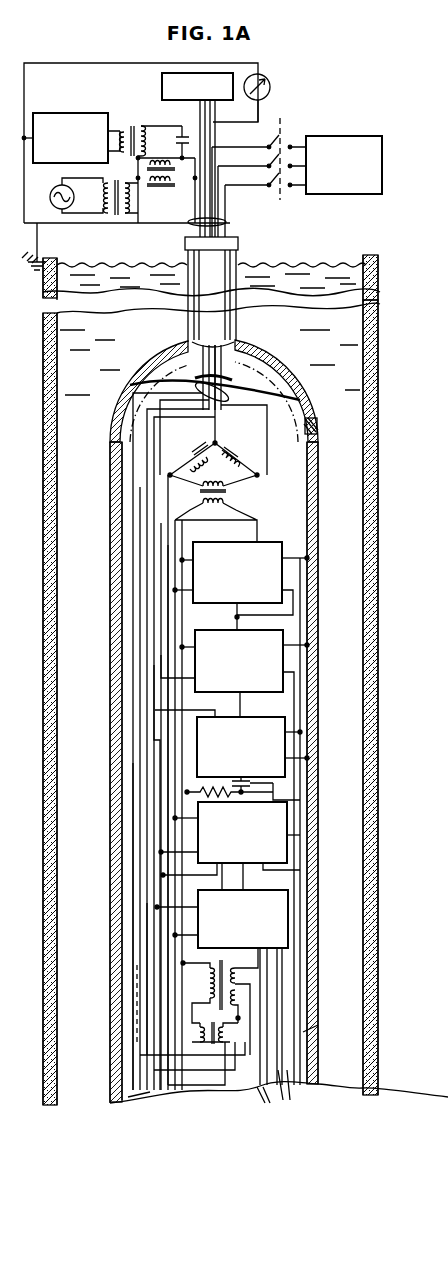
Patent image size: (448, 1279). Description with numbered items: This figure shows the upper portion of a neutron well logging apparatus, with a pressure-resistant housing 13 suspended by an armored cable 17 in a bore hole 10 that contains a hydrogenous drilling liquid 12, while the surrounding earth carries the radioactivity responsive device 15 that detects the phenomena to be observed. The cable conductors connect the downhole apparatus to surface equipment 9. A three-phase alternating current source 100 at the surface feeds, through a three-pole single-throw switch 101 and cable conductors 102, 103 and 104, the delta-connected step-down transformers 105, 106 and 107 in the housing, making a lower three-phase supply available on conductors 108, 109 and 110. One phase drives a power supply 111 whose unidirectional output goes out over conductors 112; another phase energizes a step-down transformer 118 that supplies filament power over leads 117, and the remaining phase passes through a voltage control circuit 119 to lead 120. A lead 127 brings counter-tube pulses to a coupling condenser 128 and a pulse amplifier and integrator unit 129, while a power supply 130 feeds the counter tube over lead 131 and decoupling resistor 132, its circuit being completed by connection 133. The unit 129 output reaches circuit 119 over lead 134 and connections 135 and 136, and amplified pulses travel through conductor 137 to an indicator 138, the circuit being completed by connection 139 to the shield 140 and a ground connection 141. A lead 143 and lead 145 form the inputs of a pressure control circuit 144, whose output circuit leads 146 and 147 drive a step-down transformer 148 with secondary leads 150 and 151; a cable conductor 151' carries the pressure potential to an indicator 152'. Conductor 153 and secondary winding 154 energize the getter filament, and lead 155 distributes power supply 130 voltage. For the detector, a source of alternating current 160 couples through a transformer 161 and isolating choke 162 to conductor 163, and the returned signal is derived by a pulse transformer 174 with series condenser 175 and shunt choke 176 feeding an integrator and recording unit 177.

The surface equipment 9 is at (350, 98).
The bore hole 10 is at (359, 340).
The hydrogenous drilling liquid 12 is at (316, 268).
The pressure-resistant housing 13 is at (296, 373).
The radioactivity responsive device 15 is at (381, 464).
The armored cable 17 is at (240, 318).
The three-phase alternating current source 100 is at (342, 136).
The three-pole, single-throw switch 101 is at (283, 123).
The cable conductor 102 is at (221, 146).
The cable conductor 103 is at (232, 168).
The cable conductor 104 is at (255, 186).
The delta-connected step-down transformer 105 is at (197, 440).
The delta-connected step-down transformer 106 is at (247, 452).
The delta-connected step-down transformer 107 is at (223, 505).
The conductor 108 is at (163, 523).
The conductor 109 is at (170, 545).
The conductor 110 is at (177, 555).
The power supply 111 is at (277, 886).
The conductors 112 is at (294, 1093).
The leads 117 is at (269, 1105).
The step-down transformer 118 is at (233, 968).
The voltage control circuit 119 is at (160, 637).
The lead 120 is at (150, 733).
The lead 127 is at (303, 1032).
The coupling condenser 128 is at (293, 783).
The pulse amplifier and integrator unit 129 is at (258, 717).
The power supply 130 is at (229, 542).
The lead 131 is at (185, 615).
The decoupling resistor 132 is at (293, 800).
The connection 133 is at (306, 557).
The lead 134 is at (215, 716).
The connection 135 is at (320, 632).
The connection 136 is at (320, 740).
The conductor 137 is at (203, 118).
The indicator 138 is at (162, 83).
The connection 139 is at (300, 428).
The shield 140 is at (227, 233).
The ground connection 141 is at (90, 226).
The lead 143 is at (167, 987).
The pressure control circuit 144 is at (293, 833).
The lead 145 is at (293, 873).
The output circuit lead 146 is at (197, 852).
The output circuit lead 147 is at (170, 875).
The step-down transformer 148 is at (216, 1051).
The lead 150 is at (140, 1063).
The lead 151 is at (157, 1066).
The cable conductor 151' is at (189, 588).
The indicator 152' is at (277, 81).
The conductor 153 is at (140, 1100).
The secondary winding 154 is at (237, 1002).
The lead 155 is at (313, 672).
The source of alternating current 160 is at (66, 193).
The transformer 161 is at (120, 225).
The isolating choke 162 is at (166, 193).
The conductor 163 is at (192, 233).
The pulse transformer 174 is at (124, 119).
The series condenser 175 is at (186, 137).
The shunt choke 176 is at (157, 158).
The integrator and recording unit 177 is at (70, 113).